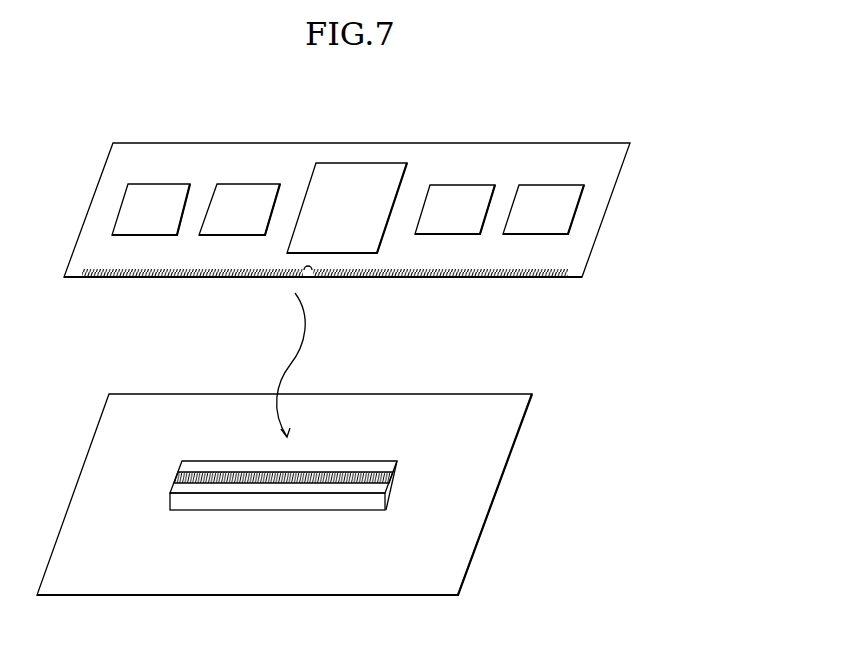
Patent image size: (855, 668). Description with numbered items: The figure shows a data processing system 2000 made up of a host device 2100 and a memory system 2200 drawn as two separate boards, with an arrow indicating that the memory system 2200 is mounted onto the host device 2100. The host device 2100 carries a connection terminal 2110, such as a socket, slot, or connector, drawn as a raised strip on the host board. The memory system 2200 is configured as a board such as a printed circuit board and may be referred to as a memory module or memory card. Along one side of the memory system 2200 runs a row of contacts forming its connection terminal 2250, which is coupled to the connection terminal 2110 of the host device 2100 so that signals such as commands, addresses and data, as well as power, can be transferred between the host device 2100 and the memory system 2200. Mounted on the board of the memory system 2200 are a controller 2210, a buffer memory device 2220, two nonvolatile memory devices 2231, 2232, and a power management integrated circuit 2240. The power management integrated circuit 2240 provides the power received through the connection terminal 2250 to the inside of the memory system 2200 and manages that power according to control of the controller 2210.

The data processing system 2000 is at (208, 110).
The memory system 2200 is at (347, 230).
The connection terminal 2250 is at (97, 278).
The power management integrated circuit 2240 is at (151, 209).
The buffer memory device 2220 is at (239, 209).
The controller 2210 is at (347, 208).
The nonvolatile memory device 2231 is at (455, 209).
The nonvolatile memory device 2232 is at (543, 209).
The host device 2100 is at (284, 494).
The connection terminal 2110 is at (417, 455).